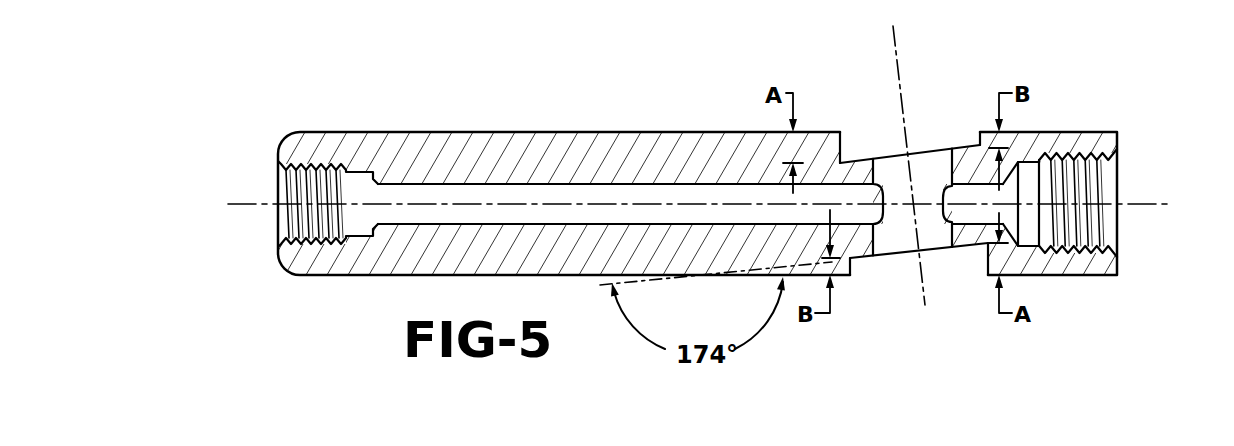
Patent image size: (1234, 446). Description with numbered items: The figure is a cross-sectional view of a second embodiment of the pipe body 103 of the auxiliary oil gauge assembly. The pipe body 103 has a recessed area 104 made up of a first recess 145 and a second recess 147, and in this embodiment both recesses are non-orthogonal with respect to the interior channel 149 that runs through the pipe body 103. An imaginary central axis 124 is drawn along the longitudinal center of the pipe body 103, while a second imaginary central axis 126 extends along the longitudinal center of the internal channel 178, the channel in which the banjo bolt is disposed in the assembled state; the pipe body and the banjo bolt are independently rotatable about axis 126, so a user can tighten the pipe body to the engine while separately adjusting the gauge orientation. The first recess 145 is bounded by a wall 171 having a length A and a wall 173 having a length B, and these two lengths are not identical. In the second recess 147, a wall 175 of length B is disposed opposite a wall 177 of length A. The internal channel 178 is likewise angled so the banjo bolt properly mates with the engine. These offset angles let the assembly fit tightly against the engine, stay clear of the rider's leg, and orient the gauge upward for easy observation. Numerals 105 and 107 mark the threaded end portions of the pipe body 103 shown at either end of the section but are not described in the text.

The pipe body 103 is at (472, 124).
The recessed area 104 is at (902, 203).
The first end 105 is at (275, 119).
The second end 107 is at (1111, 114).
The imaginary central axis 124 is at (235, 203).
The imaginary central axis 126 is at (897, 35).
The first recess 145 is at (892, 128).
The second recess 147 is at (906, 274).
The interior channel 149 is at (608, 205).
The wall 171 is at (842, 145).
The wall 173 is at (976, 143).
The wall 175 is at (851, 266).
The wall 177 is at (987, 262).
The internal channel 178 is at (926, 173).